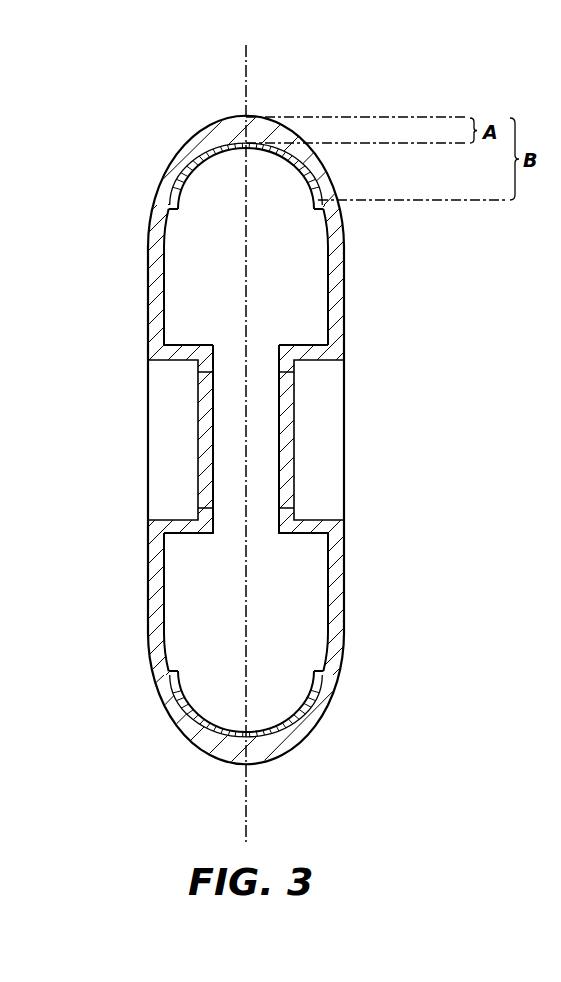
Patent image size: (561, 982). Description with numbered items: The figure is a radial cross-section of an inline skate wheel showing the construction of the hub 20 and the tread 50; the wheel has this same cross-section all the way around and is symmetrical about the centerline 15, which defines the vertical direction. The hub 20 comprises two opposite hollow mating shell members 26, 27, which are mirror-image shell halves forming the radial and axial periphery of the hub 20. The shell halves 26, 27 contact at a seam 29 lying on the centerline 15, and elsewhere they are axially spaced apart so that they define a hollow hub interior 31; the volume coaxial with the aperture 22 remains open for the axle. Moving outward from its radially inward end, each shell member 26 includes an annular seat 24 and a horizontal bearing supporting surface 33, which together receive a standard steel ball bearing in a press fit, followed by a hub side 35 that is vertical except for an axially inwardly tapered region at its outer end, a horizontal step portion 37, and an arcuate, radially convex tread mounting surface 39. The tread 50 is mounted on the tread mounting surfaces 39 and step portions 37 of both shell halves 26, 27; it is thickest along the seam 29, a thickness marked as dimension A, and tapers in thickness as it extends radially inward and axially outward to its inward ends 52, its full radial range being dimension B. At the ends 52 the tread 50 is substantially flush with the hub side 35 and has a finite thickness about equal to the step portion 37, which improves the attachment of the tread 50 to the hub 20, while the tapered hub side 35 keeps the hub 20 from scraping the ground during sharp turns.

The centerline 15 is at (250, 74).
The hub 20 is at (124, 577).
The aperture 22 is at (230, 435).
The annular seat 24 is at (198, 364).
The shell member 26 is at (143, 325).
The shell member 27 is at (352, 597).
The seam 29 is at (247, 143).
The hollow hub interior 31 is at (200, 258).
The bearing supporting surface 33 is at (176, 363).
The hub side 35 is at (157, 292).
The step portion 37 is at (166, 206).
The tread mounting surface 39 is at (175, 180).
The tread 50 is at (195, 128).
The end 52 is at (171, 192).